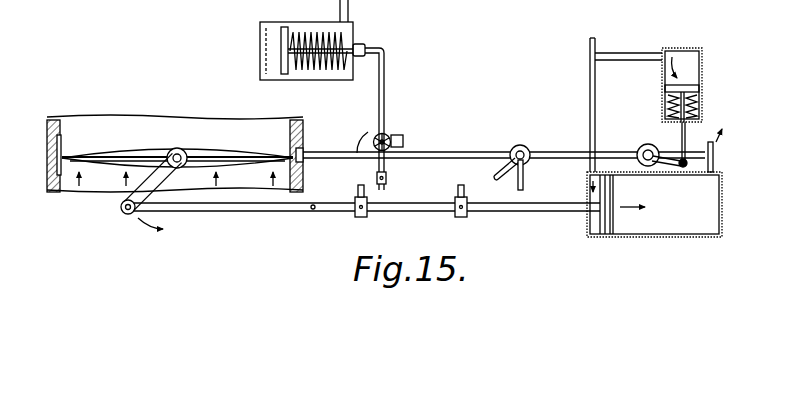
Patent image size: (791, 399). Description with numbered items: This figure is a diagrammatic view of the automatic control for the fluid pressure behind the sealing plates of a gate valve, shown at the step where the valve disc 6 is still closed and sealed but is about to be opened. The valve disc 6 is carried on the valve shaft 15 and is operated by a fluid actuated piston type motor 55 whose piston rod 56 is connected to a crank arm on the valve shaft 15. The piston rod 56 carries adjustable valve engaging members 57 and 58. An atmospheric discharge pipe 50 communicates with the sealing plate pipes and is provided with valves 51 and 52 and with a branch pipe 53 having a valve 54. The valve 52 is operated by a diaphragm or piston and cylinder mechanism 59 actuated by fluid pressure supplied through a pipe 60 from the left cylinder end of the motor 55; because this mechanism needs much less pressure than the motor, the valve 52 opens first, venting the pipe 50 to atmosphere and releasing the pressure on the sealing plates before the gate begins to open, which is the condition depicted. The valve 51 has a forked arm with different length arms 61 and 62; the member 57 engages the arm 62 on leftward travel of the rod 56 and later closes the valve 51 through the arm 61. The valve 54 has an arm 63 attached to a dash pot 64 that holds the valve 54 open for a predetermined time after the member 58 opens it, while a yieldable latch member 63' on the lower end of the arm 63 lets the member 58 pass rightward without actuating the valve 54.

The valve gate 6 is at (128, 151).
The trunnion 15 is at (186, 152).
The atmospheric discharge pipe 50 is at (428, 152).
The valve 51 is at (528, 150).
The valve 52 is at (643, 144).
The branch pipe 53 is at (357, 146).
The valve 54 is at (378, 132).
The fluid actuated piston motor 55 is at (666, 223).
The piston rod 56 is at (402, 208).
The valve engaging member 57 is at (472, 190).
The valve engaging member 58 is at (359, 194).
The diaphragm or piston and cylinder mechanism 59 is at (702, 82).
The pipe 60 is at (590, 83).
The arm 61 is at (525, 186).
The arm 62 is at (497, 172).
The arm 63 is at (397, 119).
The yieldable latch member 63' is at (404, 182).
The dash pot 64 is at (277, 43).